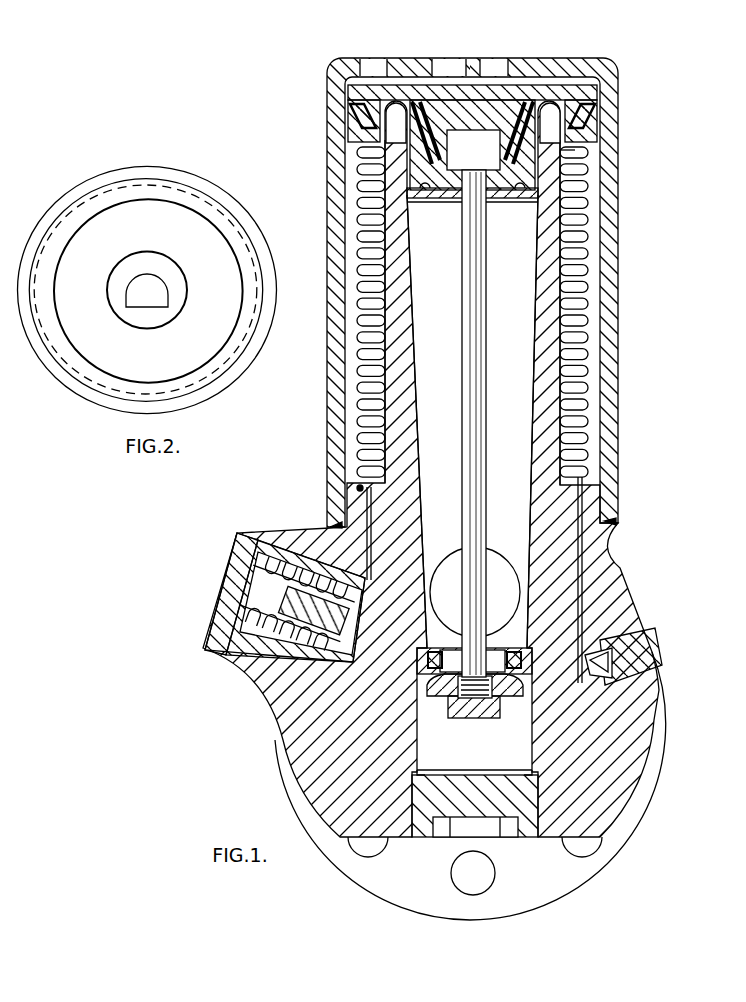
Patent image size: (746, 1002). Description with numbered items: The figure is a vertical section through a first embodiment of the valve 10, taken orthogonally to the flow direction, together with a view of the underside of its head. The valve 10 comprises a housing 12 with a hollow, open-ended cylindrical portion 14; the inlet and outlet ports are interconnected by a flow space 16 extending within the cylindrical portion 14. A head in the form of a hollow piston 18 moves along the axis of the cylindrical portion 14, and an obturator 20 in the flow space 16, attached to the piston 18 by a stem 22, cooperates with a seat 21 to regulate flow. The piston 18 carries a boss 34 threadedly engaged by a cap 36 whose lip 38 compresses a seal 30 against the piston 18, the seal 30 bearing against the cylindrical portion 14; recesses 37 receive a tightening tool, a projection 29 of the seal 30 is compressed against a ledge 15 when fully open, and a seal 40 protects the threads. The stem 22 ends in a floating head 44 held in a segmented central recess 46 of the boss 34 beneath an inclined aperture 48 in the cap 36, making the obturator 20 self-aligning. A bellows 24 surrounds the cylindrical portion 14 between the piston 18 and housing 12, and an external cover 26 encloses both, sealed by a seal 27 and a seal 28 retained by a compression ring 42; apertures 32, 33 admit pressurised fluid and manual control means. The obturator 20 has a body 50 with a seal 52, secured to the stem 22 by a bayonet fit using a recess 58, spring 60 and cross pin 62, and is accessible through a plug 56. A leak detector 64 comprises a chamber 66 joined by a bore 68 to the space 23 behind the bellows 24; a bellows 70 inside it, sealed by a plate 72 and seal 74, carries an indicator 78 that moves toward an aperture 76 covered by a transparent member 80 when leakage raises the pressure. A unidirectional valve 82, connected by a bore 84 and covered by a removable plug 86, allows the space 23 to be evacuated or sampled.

In FIG. 1, the valve 10 is at (219, 776).
In FIG. 1, the housing 12 is at (585, 787).
In FIG. 1, the cylindrical portion 14 is at (548, 334).
In FIG. 1, the ledge 15 is at (409, 205).
In FIG. 1, the flow space 16 is at (424, 338).
In FIG. 2, the piston 18 is at (143, 368).
In FIG. 1, the piston 18 is at (414, 66).
In FIG. 1, the obturator 20 is at (458, 712).
In FIG. 1, the seat 21 is at (436, 640).
In FIG. 1, the stem 22 is at (482, 441).
In FIG. 1, the space 23 is at (366, 290).
In FIG. 1, the bellows 24 is at (370, 231).
In FIG. 1, the external cover 26 is at (337, 401).
In FIG. 1, the seal 27 is at (333, 527).
In FIG. 1, the seal 28 is at (348, 126).
In FIG. 1, the projection 29 is at (385, 186).
In FIG. 1, the seal 30 is at (396, 108).
In FIG. 1, the aperture 32 is at (508, 66).
In FIG. 1, the aperture 33 is at (380, 64).
In FIG. 2, the boss 34 is at (166, 266).
In FIG. 1, the boss 34 is at (540, 96).
In FIG. 1, the cap 36 is at (497, 118).
In FIG. 1, the recesses 37 is at (427, 195).
In FIG. 1, the lip 38 is at (405, 197).
In FIG. 1, the seal 40 is at (570, 152).
In FIG. 1, the compression ring 42 is at (350, 88).
In FIG. 1, the head 44 is at (476, 136).
In FIG. 2, the central recess 46 is at (168, 293).
In FIG. 1, the central recess 46 is at (458, 134).
In FIG. 1, the aperture 48 is at (492, 200).
In FIG. 1, the body 50 is at (483, 700).
In FIG. 1, the seal 52 is at (507, 640).
In FIG. 1, the plug 56 is at (478, 790).
In FIG. 1, the recess 58 is at (440, 700).
In FIG. 1, the spring 60 is at (470, 712).
In FIG. 1, the cross pin 62 is at (512, 700).
In FIG. 1, the leak detector 64 is at (224, 631).
In FIG. 1, the chamber 66 is at (282, 675).
In FIG. 1, the bore 68 is at (365, 488).
In FIG. 1, the bellows 70 is at (281, 542).
In FIG. 1, the plate 72 is at (236, 549).
In FIG. 1, the seal 74 is at (248, 534).
In FIG. 1, the aperture 76 is at (244, 583).
In FIG. 1, the indicator 78 is at (258, 659).
In FIG. 1, the transparent member 80 is at (230, 601).
In FIG. 1, the unidirectional valve 82 is at (650, 646).
In FIG. 1, the bore 84 is at (614, 562).
In FIG. 1, the removable plug 86 is at (636, 640).